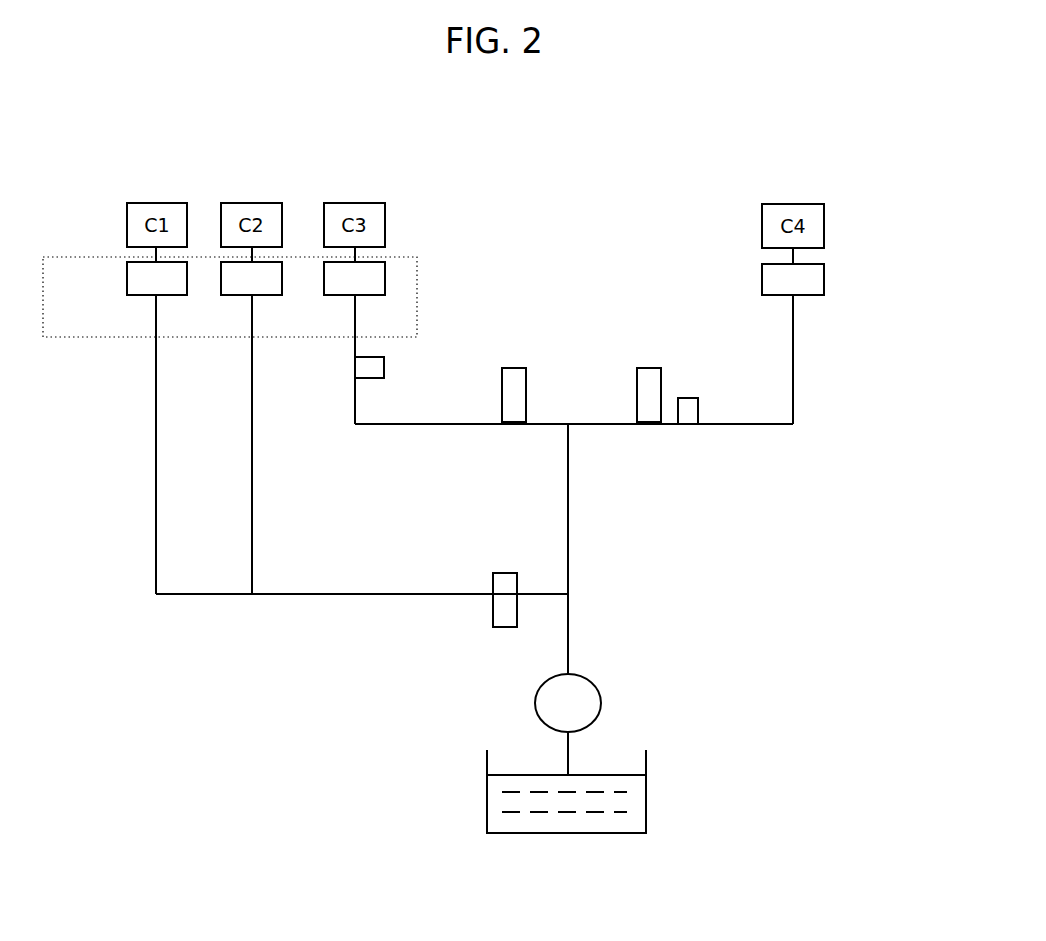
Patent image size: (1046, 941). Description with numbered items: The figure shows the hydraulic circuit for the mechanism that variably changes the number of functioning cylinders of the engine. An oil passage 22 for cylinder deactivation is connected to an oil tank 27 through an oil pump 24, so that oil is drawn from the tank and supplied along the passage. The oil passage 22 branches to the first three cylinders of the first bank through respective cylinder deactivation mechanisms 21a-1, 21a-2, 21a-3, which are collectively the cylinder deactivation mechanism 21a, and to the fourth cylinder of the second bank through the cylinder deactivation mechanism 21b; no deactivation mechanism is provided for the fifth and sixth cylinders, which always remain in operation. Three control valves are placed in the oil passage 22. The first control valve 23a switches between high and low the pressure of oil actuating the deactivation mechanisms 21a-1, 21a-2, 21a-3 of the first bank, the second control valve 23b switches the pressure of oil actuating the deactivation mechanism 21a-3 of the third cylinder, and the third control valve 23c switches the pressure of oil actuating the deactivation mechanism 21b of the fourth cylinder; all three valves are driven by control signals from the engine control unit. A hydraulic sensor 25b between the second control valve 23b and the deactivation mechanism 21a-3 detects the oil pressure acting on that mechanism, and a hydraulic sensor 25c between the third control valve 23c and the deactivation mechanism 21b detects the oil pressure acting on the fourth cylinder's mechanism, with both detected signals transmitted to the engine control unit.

The cylinder deactivation mechanism 21a is at (405, 255).
The cylinder deactivation mechanism 21a-1 is at (140, 297).
The cylinder deactivation mechanism 21a-2 is at (243, 297).
The cylinder deactivation mechanism 21a-3 is at (342, 297).
The cylinder deactivation mechanism 21b is at (805, 295).
The oil passage 22 is at (570, 592).
The first control valve 23a is at (492, 573).
The second control valve 23b is at (500, 408).
The third control valve 23c is at (650, 423).
The oil pump 24 is at (587, 680).
The hydraulic sensor 25b is at (385, 368).
The hydraulic sensor 25c is at (690, 397).
The oil tank 27 is at (647, 805).